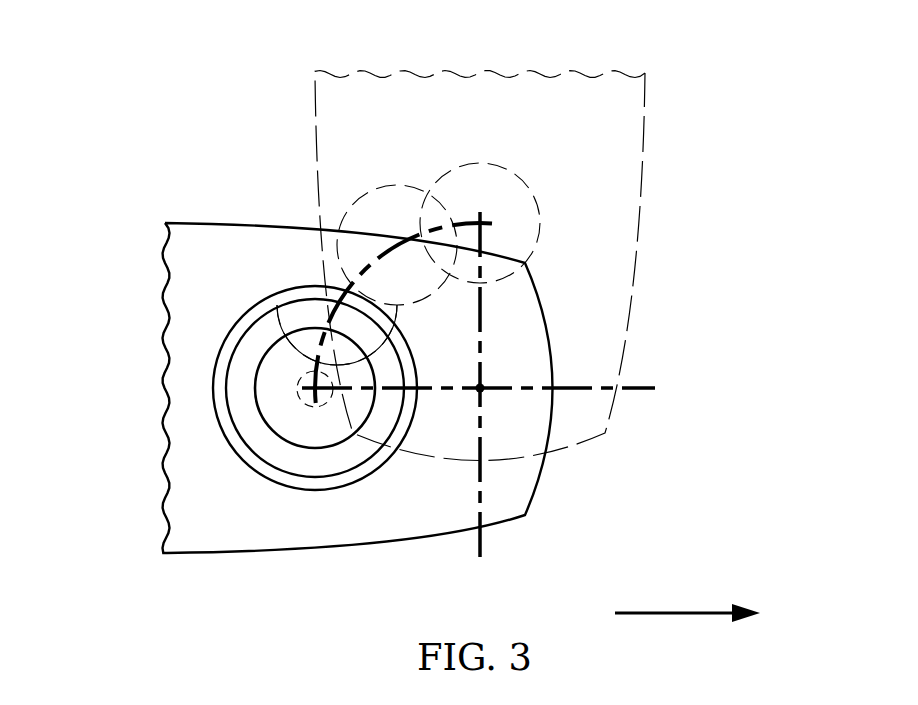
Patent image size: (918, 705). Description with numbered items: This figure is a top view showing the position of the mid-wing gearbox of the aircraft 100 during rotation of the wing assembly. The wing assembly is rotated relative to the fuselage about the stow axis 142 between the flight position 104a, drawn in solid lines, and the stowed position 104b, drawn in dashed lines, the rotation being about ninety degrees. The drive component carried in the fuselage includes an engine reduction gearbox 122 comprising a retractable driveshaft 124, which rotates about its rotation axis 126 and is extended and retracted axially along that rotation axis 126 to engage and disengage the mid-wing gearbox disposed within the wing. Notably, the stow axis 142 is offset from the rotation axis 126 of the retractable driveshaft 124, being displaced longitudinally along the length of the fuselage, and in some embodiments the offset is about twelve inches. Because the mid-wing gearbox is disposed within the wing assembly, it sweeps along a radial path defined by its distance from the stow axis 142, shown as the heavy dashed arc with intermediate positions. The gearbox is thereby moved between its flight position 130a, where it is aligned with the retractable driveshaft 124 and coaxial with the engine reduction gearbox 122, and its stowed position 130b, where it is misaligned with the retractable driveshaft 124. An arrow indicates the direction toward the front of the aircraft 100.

The aircraft 100 is at (197, 64).
The flight position 104a is at (152, 394).
The stowed position 104b is at (429, 64).
The engine reduction gearbox 122 is at (268, 298).
The retractable driveshaft 124 is at (307, 408).
The rotation axis 126 is at (298, 383).
The flight position of MWGB 130a is at (313, 449).
The stowed position of MWGB 130b is at (460, 167).
The stow axis 142 is at (485, 395).